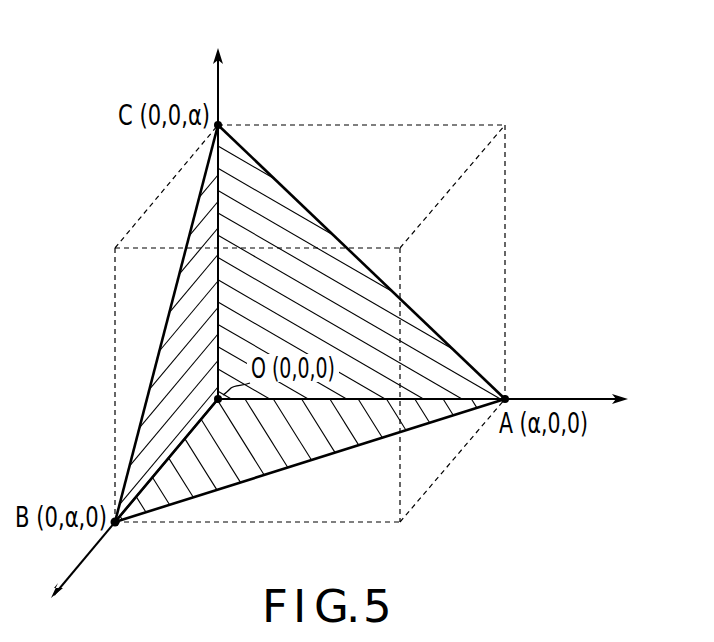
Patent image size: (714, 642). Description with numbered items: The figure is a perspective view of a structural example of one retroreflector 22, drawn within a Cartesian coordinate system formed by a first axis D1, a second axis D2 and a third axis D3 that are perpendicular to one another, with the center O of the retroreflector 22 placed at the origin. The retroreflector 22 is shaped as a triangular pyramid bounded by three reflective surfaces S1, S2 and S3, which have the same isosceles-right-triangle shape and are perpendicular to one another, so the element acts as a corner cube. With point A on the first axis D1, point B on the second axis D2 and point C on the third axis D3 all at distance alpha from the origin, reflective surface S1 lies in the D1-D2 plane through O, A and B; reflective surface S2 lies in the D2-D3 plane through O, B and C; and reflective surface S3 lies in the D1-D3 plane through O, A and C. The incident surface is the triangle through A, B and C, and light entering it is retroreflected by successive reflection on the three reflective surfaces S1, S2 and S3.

The retroreflector 22 is at (310, 327).
The reflective surface S1 is at (300, 463).
The reflective surface S2 is at (152, 358).
The reflective surface S3 is at (283, 181).
The first axis D1 is at (646, 400).
The second axis D2 is at (40, 612).
The third axis D3 is at (218, 33).